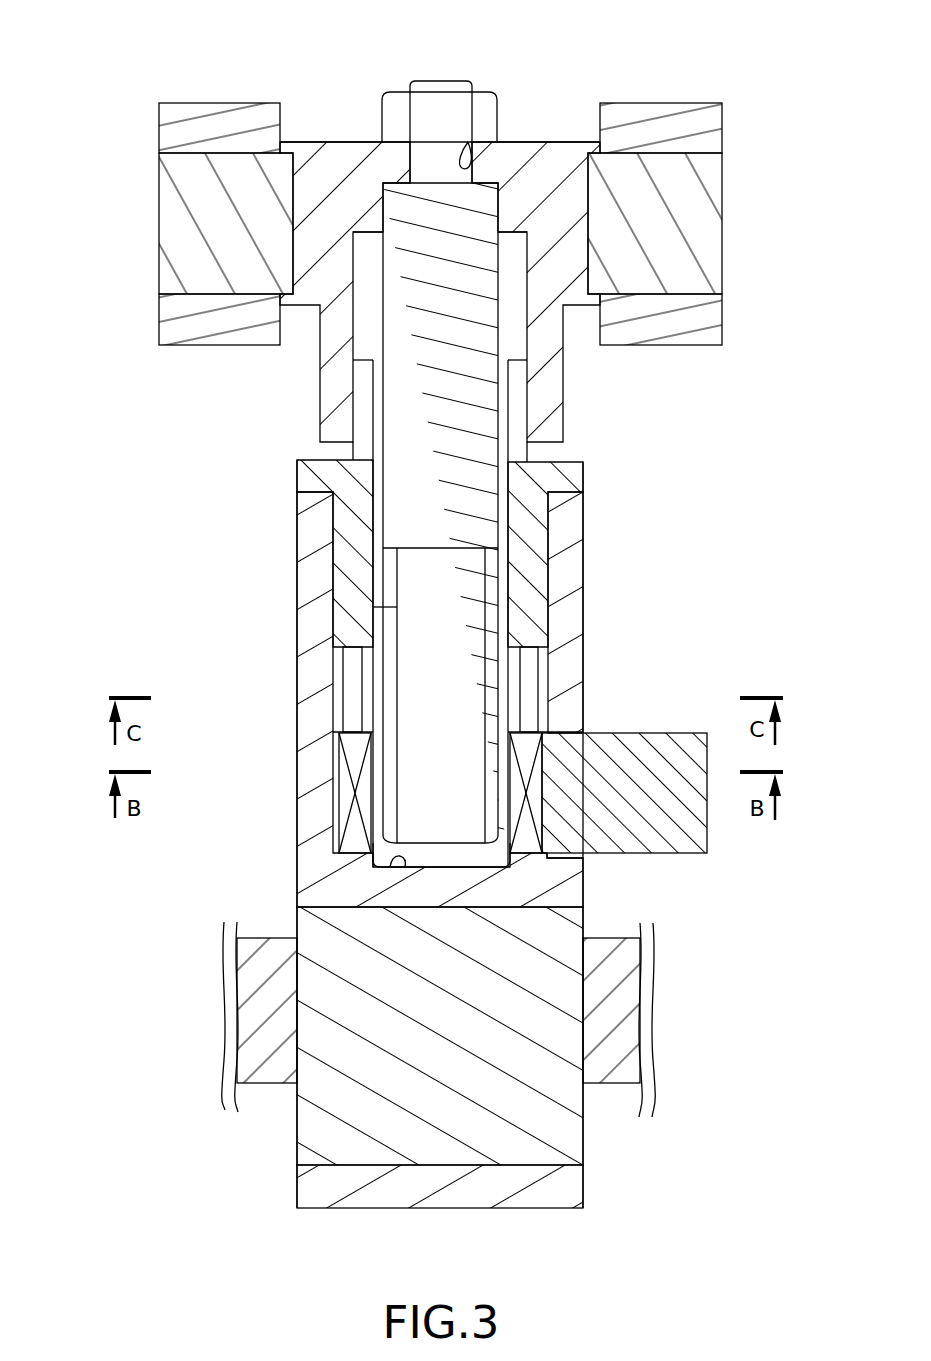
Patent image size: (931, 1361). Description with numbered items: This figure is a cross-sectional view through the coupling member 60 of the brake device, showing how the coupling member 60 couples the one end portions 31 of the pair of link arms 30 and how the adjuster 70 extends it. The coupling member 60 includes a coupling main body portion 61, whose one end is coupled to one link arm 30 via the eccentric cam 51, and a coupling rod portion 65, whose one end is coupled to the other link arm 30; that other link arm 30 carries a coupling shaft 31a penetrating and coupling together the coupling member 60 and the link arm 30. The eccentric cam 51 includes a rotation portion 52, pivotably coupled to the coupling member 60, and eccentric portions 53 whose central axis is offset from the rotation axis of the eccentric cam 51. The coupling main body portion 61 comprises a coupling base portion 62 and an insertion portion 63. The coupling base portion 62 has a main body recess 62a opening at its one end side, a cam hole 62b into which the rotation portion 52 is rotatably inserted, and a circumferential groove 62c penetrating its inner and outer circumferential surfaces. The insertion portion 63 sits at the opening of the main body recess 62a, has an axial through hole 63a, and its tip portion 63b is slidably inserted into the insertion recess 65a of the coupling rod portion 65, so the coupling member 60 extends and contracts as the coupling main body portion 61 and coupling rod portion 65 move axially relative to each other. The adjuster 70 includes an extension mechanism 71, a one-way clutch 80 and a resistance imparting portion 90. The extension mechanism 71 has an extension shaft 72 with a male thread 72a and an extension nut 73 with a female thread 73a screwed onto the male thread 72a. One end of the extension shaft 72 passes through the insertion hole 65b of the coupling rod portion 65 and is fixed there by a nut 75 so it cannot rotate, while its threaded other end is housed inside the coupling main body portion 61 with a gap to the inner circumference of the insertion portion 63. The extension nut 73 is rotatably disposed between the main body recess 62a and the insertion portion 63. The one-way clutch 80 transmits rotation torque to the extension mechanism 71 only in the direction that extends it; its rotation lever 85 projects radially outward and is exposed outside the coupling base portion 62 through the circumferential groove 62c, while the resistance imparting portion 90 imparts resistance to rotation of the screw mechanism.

The link arm 30 is at (160, 130).
The one end portion 31 is at (197, 127).
The coupling shaft 31a is at (253, 190).
The coupling member 60 is at (535, 112).
The coupling main body portion 61 is at (588, 570).
The coupling base portion 62 is at (585, 640).
The main body recess 62a is at (542, 608).
The cam hole 62b is at (353, 1163).
The circumferential groove 62c is at (587, 852).
The insertion portion 63 is at (585, 477).
The through hole 63a is at (508, 447).
The tip portion 63b is at (517, 418).
The coupling rod portion 65 is at (567, 383).
The insertion recess 65a is at (517, 323).
The insertion hole 65b is at (468, 140).
The adjuster 70 is at (311, 743).
The extension mechanism 71 is at (365, 618).
The extension shaft 72 is at (383, 458).
The male thread 72a is at (390, 573).
The extension nut 73 is at (374, 669).
The female thread 73a is at (386, 866).
The nut 75 is at (385, 98).
The one-way clutch 80 is at (338, 808).
The rotation lever 85 is at (572, 852).
The resistance imparting portion 90 is at (542, 677).
The eccentric cam 51 is at (294, 917).
The rotation portion 52 is at (517, 1153).
The eccentric portion 53 is at (255, 1057).